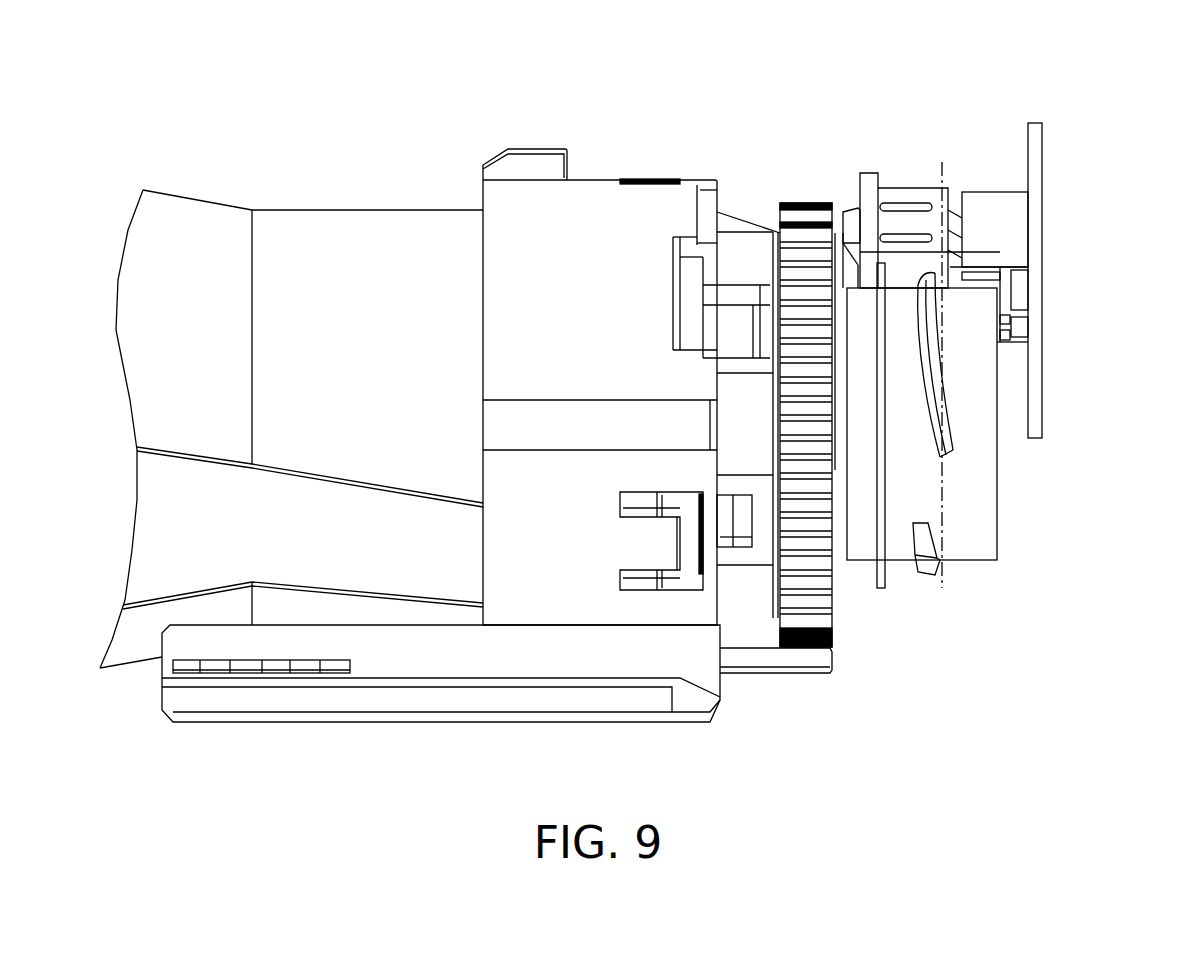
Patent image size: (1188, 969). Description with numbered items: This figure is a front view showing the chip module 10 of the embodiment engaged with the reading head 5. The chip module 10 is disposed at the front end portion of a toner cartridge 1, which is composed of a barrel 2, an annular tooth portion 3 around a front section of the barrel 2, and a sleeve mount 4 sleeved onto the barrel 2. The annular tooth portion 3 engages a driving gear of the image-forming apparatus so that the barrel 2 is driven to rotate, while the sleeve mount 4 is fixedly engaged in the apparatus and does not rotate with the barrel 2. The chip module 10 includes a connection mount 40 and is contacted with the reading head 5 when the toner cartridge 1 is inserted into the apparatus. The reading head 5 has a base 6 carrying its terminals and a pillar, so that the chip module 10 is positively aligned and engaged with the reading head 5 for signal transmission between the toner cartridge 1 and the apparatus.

The toner cartridge 1 is at (286, 190).
The barrel 2 is at (408, 220).
The annular tooth portion 3 is at (805, 235).
The sleeve mount 4 is at (595, 200).
The reading head 5 is at (1043, 162).
The base 6 is at (1005, 230).
The chip module 10 is at (942, 130).
The connection mount 40 is at (905, 185).